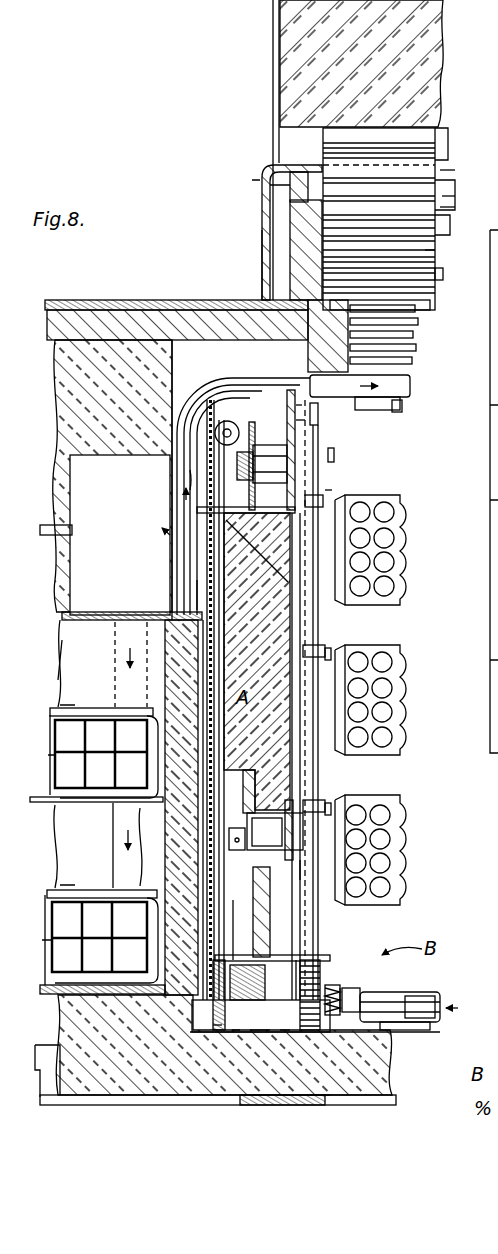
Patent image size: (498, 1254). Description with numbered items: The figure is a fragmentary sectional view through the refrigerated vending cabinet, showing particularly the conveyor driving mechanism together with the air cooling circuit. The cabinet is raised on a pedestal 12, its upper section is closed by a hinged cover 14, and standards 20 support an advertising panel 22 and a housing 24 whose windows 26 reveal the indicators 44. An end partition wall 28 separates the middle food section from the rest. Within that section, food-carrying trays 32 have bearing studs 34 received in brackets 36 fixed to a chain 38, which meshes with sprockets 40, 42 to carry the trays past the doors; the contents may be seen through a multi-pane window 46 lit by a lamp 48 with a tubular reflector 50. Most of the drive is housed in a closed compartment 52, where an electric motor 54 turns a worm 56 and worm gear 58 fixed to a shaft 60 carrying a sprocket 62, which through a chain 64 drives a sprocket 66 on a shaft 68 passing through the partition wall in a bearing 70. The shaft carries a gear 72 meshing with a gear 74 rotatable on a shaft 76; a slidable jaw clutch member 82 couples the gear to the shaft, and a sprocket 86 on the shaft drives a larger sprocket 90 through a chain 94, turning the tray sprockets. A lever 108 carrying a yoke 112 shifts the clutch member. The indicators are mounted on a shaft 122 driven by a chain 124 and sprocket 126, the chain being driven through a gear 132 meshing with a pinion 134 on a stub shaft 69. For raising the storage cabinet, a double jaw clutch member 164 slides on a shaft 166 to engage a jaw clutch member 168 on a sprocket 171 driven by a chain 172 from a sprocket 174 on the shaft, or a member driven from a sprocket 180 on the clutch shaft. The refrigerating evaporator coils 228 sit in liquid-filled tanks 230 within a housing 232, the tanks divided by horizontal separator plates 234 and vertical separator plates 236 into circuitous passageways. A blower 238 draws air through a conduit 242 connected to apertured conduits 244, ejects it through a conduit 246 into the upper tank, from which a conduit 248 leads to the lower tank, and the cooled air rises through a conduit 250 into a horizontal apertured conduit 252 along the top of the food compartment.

The pedestal 12 is at (45, 1100).
The hinged cover 14 is at (128, 300).
The standards 20 is at (262, 250).
The panel 22 is at (430, 43).
The housing 24 is at (440, 172).
The windows 26 is at (445, 198).
The end partition wall 28 is at (292, 731).
The food-carrying trays 32 is at (400, 800).
The bearing studs 34 is at (402, 603).
The brackets 36 is at (240, 590).
The chain 38 is at (330, 462).
The sprocket 40 is at (322, 437).
The sprocket 42 is at (301, 870).
The indicators 44 is at (450, 205).
The window 46 is at (412, 330).
The lamp 48 is at (442, 276).
The tubular reflector 50 is at (430, 256).
The closed compartment 52 is at (215, 300).
The electric motor 54 is at (305, 423).
The worm 56 is at (252, 422).
The worm gear 58 is at (257, 551).
The shaft 60 is at (190, 478).
The sprocket 62 is at (227, 420).
The chain 64 is at (257, 661).
The sprocket 66 is at (224, 857).
The shaft 68 is at (216, 958).
The stub shafts 69 is at (330, 492).
The bearing 70 is at (233, 962).
The gear 72 is at (312, 964).
The gear 74 is at (331, 985).
The shaft 76 is at (395, 992).
The jaw clutch member 82 is at (345, 990).
The sprocket 86 is at (265, 1031).
The sprocket 90 is at (232, 815).
The chain 94 is at (267, 912).
The lever 108 is at (320, 1100).
The yoke 112 is at (350, 988).
The shaft 122 is at (389, 219).
The chain 124 is at (252, 228).
The sprocket 126 is at (252, 180).
The gear 132 is at (300, 408).
The pinion 134 is at (271, 464).
The double jaw clutch member 164 is at (285, 1031).
The shaft 166 is at (398, 1032).
The jaw clutch member 168 is at (235, 1031).
The sprocket 171 is at (214, 1026).
The chain 172 is at (255, 1031).
The sprocket 174 is at (233, 900).
The sprocket 180 is at (300, 960).
The evaporator coils 228 is at (62, 893).
The tanks 230 is at (60, 708).
The housing 232 is at (60, 660).
The horizontal separator plates 234 is at (50, 740).
The vertical separator plates 236 is at (56, 757).
The blower 238 is at (136, 526).
The conduit 242 is at (197, 594).
The apertured conduits 244 is at (420, 996).
The conduit 246 is at (128, 703).
The conduit 248 is at (136, 842).
The conduit 250 is at (196, 373).
The horizontal apertured conduit 252 is at (396, 408).